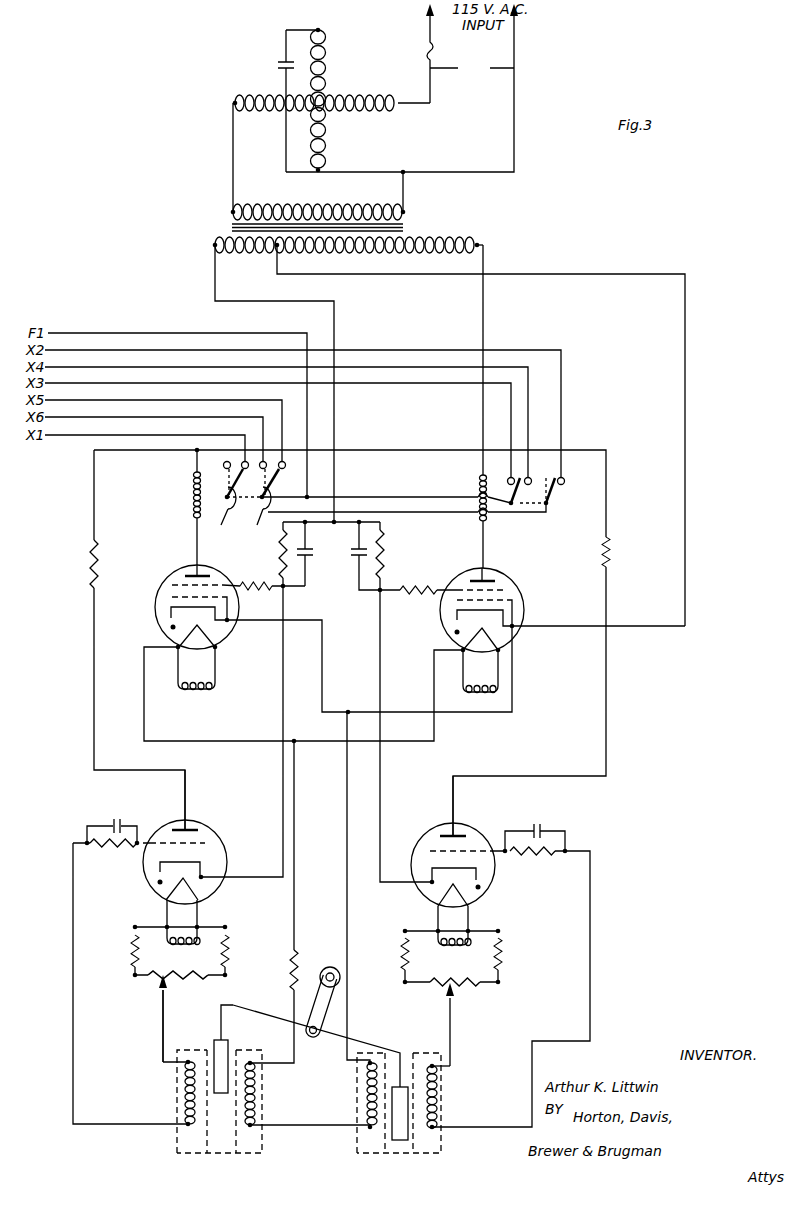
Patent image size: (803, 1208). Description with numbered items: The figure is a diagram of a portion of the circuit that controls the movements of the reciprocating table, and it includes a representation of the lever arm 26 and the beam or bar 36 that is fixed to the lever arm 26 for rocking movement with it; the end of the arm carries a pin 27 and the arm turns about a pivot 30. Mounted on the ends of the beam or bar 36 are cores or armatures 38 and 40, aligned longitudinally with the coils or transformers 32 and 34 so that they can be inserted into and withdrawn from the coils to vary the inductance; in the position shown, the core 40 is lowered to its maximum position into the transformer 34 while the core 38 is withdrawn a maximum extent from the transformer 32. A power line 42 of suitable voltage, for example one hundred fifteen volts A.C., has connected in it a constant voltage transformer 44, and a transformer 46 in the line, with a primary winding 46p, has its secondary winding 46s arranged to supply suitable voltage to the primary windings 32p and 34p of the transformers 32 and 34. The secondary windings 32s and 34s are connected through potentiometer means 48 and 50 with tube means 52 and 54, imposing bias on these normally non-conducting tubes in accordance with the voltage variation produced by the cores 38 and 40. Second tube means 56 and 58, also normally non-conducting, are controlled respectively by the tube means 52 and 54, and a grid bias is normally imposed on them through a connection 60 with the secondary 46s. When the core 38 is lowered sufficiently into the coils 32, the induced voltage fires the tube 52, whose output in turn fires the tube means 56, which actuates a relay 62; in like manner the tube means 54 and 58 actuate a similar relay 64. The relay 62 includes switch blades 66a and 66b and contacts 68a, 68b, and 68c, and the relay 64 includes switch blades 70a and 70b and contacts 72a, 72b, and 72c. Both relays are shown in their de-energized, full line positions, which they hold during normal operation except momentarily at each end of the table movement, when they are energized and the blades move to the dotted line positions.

The lever arm 26 is at (337, 1006).
The lever end pin 27 is at (312, 1035).
The pivot 30 is at (340, 971).
The induction coil means 32 is at (190, 1128).
The secondary winding 32s is at (180, 1089).
The primary winding 32p is at (257, 1103).
The induction coil means 34 is at (448, 1079).
The primary winding 34p is at (360, 1102).
The secondary winding 34s is at (445, 1117).
The beam or bar 36 is at (370, 1048).
The core or armature 38 is at (216, 1048).
The core or armature 40 is at (400, 1140).
The power line 42 is at (472, 67).
The constant voltage transformer 44 is at (268, 83).
The transformer 46 is at (221, 222).
The primary winding 46p is at (347, 208).
The secondary winding 46s is at (455, 240).
The potentiometer means 48 is at (130, 954).
The potentiometer means 50 is at (506, 964).
The tube means 52 is at (212, 844).
The tube means 54 is at (500, 882).
The second tube means 56 is at (164, 580).
The second tube means 58 is at (527, 613).
The connection 60 is at (247, 254).
The relay 62 is at (212, 488).
The relay 64 is at (565, 491).
The switch blade 66a is at (233, 506).
The switch blade 66b is at (263, 506).
The contact 68a is at (243, 461).
The contact 68b is at (262, 461).
The contact 68c is at (292, 478).
The switch blade 70a is at (512, 506).
The switch blade 70b is at (548, 506).
The contact 72a is at (509, 477).
The contact 72b is at (530, 477).
The contact 72c is at (564, 477).